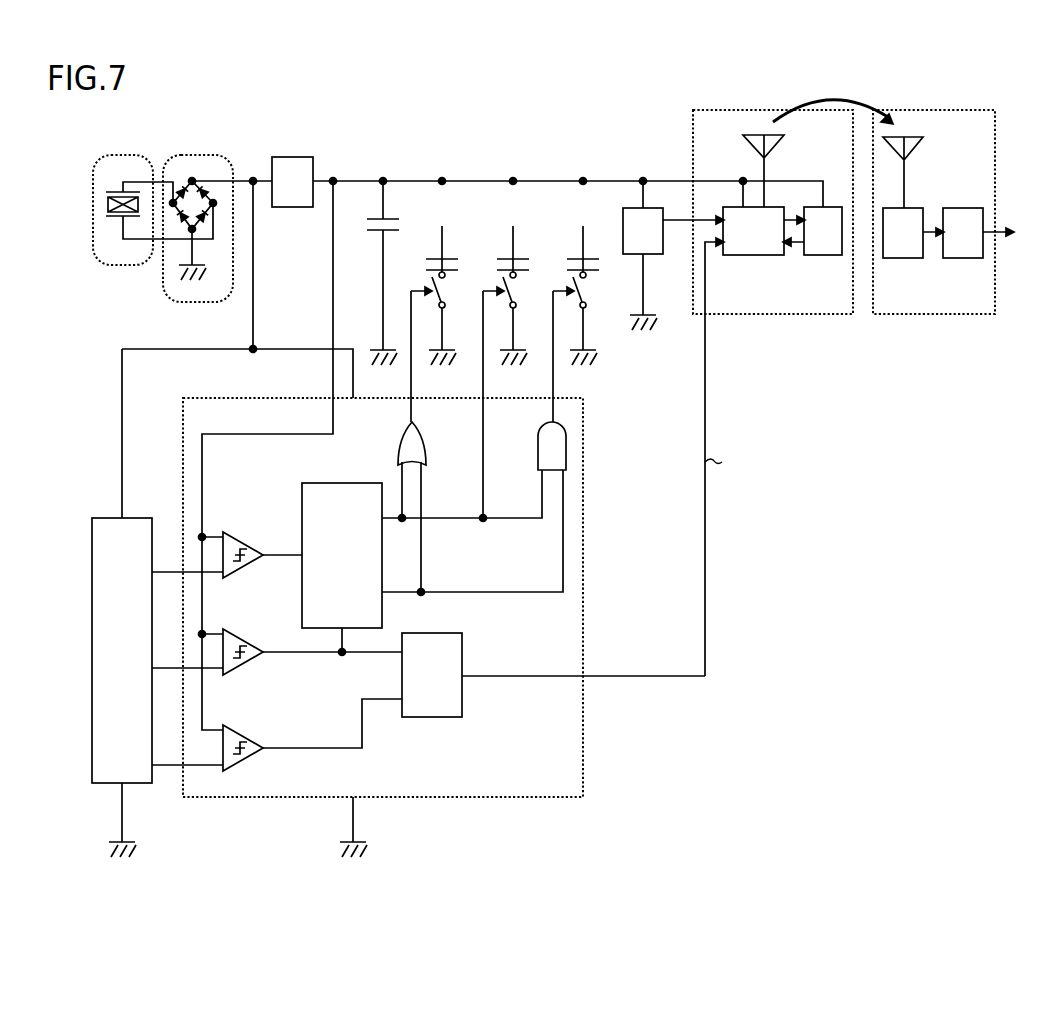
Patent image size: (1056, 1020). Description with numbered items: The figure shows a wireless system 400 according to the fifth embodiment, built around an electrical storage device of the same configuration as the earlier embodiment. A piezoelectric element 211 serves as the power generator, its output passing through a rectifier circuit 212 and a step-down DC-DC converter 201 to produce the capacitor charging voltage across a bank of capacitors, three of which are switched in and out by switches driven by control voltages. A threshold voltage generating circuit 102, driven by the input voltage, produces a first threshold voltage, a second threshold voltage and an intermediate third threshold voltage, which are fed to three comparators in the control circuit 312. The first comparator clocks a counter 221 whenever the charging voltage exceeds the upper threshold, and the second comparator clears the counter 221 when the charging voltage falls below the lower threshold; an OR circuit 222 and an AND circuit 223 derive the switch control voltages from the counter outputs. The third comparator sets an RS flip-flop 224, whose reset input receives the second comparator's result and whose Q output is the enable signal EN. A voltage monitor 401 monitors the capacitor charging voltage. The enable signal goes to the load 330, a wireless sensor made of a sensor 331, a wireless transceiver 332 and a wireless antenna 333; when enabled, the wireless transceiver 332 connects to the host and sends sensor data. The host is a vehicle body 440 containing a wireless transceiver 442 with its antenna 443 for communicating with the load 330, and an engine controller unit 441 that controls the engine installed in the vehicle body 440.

The wireless system 400 is at (933, 581).
The piezoelectric element 211 is at (120, 155).
The rectifier circuit 212 is at (193, 155).
The step-down DC-DC converter 201 is at (300, 156).
The voltage monitor 401 is at (655, 256).
The load 330 is at (783, 316).
The sensor 331 is at (823, 258).
The wireless transceiver 332 is at (753, 258).
The wireless antenna 333 is at (780, 147).
The vehicle body 440 is at (933, 316).
The engine controller unit 441 is at (962, 260).
The wireless transceiver 442 is at (902, 260).
The receiving antenna 443 is at (919, 150).
The threshold voltage generating circuit 102 is at (133, 518).
The control circuit 312 is at (583, 745).
The counter 221 is at (342, 483).
The OR circuit 222 is at (427, 452).
The AND circuit 223 is at (537, 447).
The RS flip-flop 224 is at (462, 650).